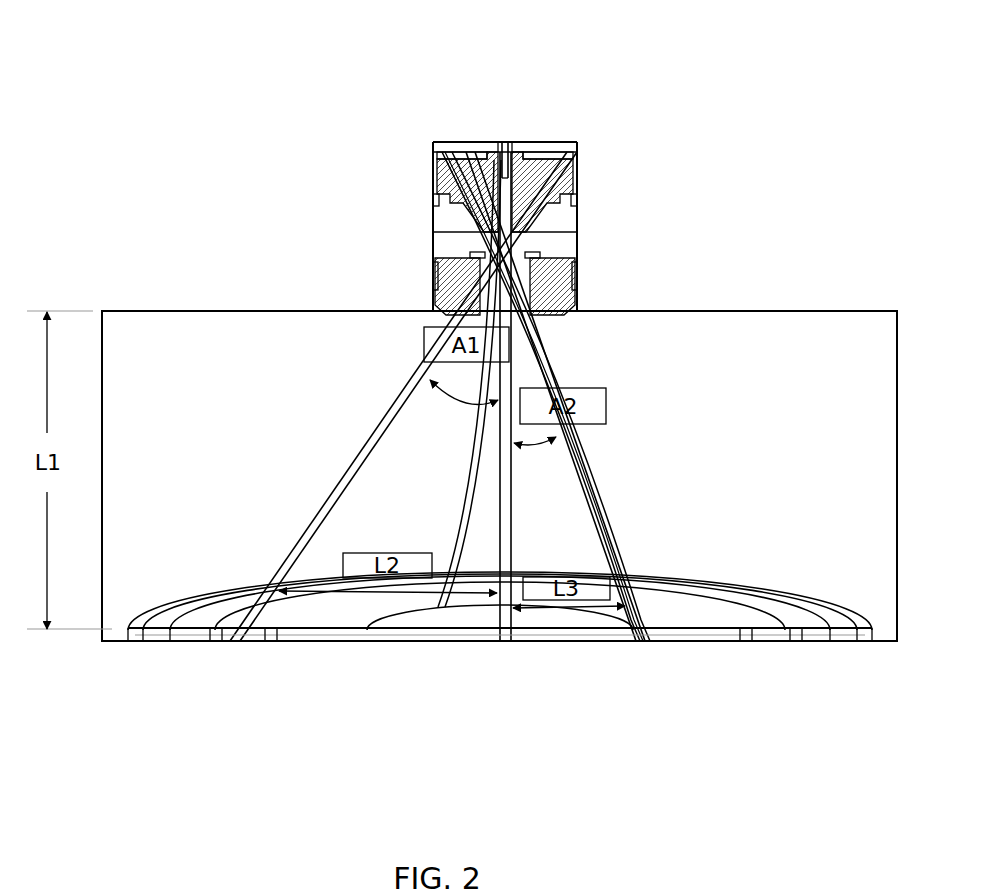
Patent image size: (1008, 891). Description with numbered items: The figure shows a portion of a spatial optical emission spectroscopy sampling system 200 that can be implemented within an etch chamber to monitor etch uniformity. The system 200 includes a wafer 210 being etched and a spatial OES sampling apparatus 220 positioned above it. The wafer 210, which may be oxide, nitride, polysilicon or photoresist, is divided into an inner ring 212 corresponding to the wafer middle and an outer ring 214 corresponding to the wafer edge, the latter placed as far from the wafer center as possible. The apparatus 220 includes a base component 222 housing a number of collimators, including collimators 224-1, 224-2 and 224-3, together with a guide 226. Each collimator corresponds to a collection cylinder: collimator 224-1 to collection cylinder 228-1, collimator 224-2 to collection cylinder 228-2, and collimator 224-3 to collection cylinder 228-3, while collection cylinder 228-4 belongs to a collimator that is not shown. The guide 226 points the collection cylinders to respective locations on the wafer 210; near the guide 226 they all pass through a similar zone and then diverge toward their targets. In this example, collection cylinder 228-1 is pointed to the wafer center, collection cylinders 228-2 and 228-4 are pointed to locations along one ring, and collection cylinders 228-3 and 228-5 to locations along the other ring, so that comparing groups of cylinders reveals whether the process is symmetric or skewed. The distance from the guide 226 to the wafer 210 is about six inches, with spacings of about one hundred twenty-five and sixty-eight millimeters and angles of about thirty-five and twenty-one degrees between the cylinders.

The spatial optical emission spectroscopy sampling system 200 is at (133, 60).
The wafer 210 is at (776, 612).
The inner ring 212 is at (708, 597).
The outer ring 214 is at (468, 612).
The spatial OES sampling apparatus 220 is at (414, 142).
The base component 222 is at (578, 181).
The collimator 224-1 is at (507, 142).
The collimator 224-2 is at (457, 142).
The collimator 224-3 is at (567, 142).
The guide 226 is at (578, 268).
The collection cylinder 228-1 is at (512, 618).
The collection cylinder 228-2 is at (645, 618).
The collection cylinder 228-3 is at (296, 540).
The collection cylinder 228-4 is at (452, 522).
The collection cylinder 228-5 is at (603, 462).